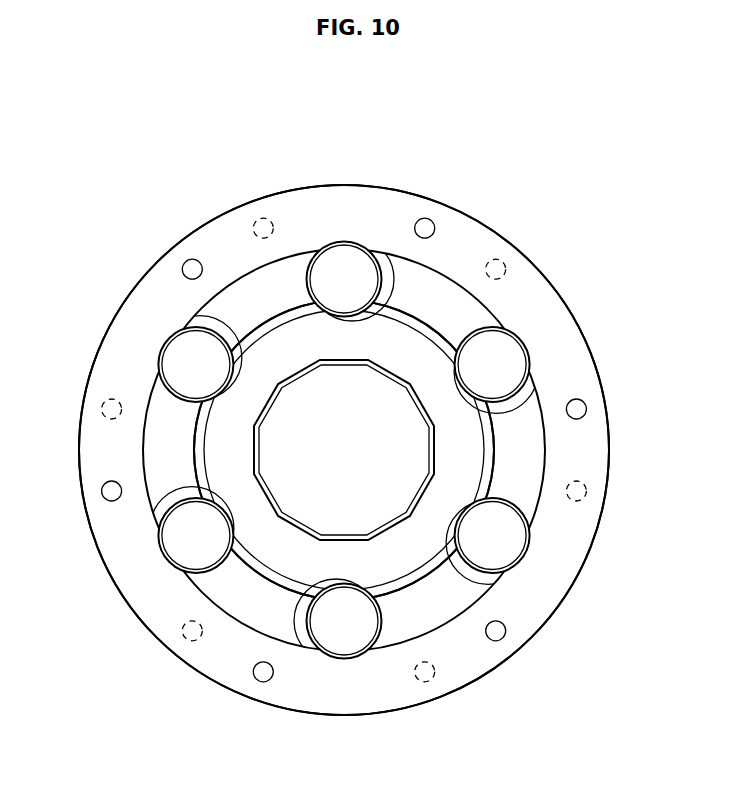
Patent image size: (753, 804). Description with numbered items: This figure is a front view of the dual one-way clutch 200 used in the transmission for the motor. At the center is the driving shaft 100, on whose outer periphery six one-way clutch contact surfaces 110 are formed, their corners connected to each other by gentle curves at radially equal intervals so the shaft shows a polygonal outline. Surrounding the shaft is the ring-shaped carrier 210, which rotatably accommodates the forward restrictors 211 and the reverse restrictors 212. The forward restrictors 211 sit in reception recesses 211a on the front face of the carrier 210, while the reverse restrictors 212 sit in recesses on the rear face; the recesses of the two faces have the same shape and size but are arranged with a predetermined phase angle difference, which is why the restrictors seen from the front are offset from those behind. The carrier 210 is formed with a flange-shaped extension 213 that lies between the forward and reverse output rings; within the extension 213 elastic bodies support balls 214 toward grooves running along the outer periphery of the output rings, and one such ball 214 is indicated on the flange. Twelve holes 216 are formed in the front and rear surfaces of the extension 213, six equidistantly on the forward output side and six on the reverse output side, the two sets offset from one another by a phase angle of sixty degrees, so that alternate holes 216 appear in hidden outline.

The dual one-way clutch 200 is at (620, 172).
The flange-shaped extension 213 is at (530, 287).
The ball 214 is at (582, 406).
The hole 216 is at (587, 503).
The carrier 210 is at (162, 493).
The reverse restrictor 212 is at (236, 348).
The one-way clutch contact surface 110 is at (417, 542).
The driving shaft 100 is at (313, 500).
The forward restrictor 211 is at (185, 360).
The reception recess 211a is at (322, 638).